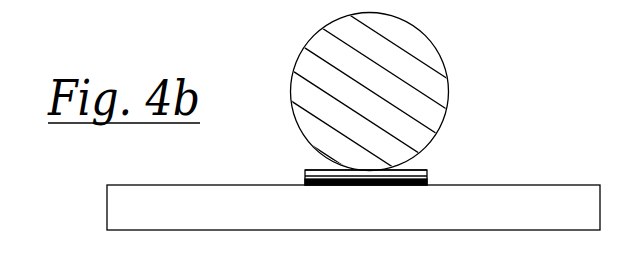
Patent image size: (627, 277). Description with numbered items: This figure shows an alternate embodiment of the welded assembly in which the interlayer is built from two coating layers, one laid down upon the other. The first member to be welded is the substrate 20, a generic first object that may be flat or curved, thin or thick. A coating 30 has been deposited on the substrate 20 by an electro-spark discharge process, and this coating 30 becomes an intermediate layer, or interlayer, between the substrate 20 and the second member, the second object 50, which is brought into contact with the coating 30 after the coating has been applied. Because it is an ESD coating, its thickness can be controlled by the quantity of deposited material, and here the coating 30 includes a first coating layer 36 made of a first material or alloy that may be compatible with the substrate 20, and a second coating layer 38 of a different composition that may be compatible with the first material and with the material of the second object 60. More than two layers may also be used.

The substrate 20 is at (210, 215).
The coating 30 is at (397, 130).
The first coating layer 36 is at (427, 183).
The second coating layer 38 is at (427, 175).
The second object 50 is at (400, 37).
The second object 60 is at (400, 168).